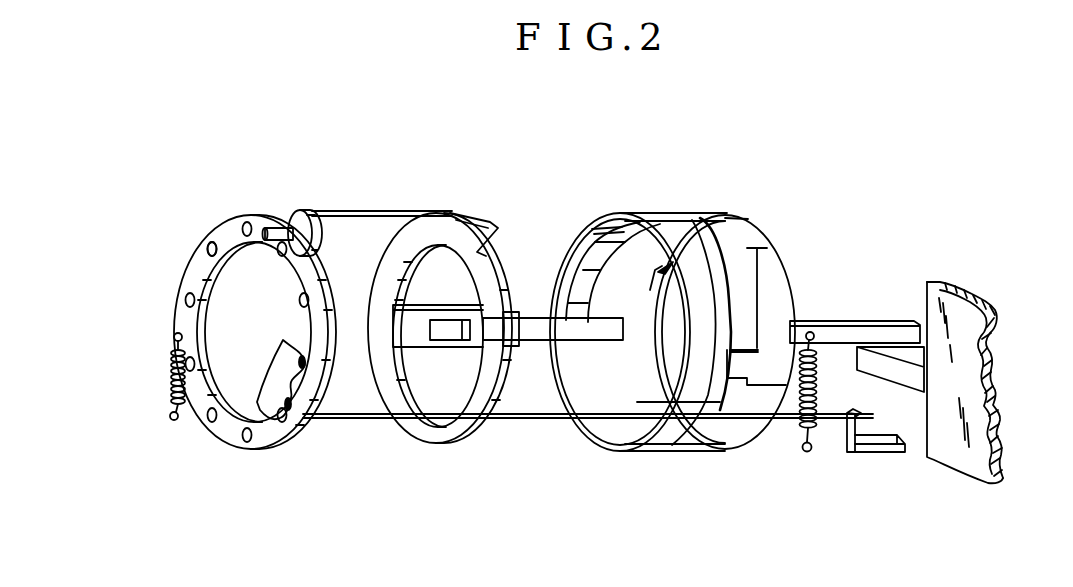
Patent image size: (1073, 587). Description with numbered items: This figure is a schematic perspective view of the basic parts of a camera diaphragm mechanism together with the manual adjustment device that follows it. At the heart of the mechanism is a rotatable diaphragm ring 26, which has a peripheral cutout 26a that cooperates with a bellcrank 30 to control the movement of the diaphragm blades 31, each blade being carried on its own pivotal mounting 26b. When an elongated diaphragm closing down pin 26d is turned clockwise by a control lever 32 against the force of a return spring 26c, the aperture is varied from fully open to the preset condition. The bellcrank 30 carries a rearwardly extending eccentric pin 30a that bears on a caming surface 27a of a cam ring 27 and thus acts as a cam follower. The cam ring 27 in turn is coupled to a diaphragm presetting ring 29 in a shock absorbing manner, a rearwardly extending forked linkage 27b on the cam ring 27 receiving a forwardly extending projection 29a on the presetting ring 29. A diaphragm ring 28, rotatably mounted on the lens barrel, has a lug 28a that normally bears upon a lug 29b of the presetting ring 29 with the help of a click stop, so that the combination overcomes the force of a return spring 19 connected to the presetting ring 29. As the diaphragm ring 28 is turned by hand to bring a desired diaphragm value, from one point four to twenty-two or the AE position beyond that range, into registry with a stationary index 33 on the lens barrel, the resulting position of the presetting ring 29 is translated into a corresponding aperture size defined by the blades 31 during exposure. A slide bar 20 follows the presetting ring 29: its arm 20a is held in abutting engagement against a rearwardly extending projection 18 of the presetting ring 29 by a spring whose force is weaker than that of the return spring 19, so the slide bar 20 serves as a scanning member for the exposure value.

The rearwardly extending projection 18 is at (880, 323).
The return spring 19 is at (815, 405).
The slide bar 20 is at (962, 460).
The arm 20a is at (897, 370).
The rotatable diaphragm ring 26 is at (265, 446).
The peripheral cutout 26a is at (278, 242).
The pivotal mounting 26b is at (206, 254).
The return spring 26c is at (176, 372).
The elongated diaphragm closing down pin 26d is at (352, 420).
The cam ring 27 is at (445, 442).
The caming surface 27a is at (470, 222).
The rearwardly extending forked linkage 27b is at (422, 340).
The diaphragm ring 28 is at (620, 452).
The lug 28a is at (740, 365).
The diaphragm presetting ring 29 is at (718, 452).
The forwardly extending projection 29a is at (540, 318).
The lug 29b is at (760, 348).
The bellcrank 30 is at (299, 215).
The rearwardly extending eccentric pin 30a is at (372, 210).
The diaphragm blade 31 is at (283, 366).
The control lever 32 is at (888, 452).
The stationary index 33 is at (653, 290).